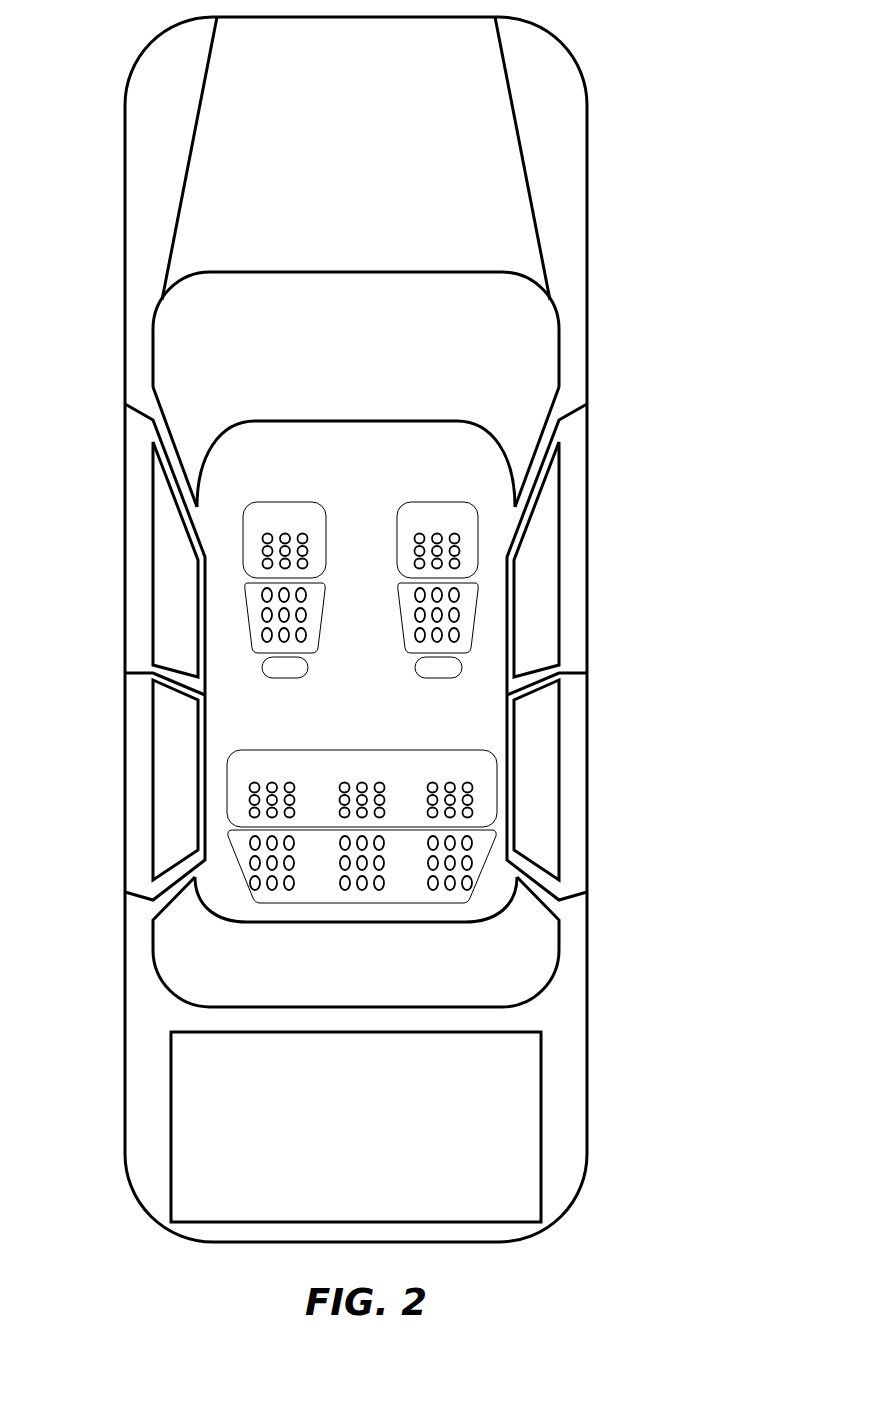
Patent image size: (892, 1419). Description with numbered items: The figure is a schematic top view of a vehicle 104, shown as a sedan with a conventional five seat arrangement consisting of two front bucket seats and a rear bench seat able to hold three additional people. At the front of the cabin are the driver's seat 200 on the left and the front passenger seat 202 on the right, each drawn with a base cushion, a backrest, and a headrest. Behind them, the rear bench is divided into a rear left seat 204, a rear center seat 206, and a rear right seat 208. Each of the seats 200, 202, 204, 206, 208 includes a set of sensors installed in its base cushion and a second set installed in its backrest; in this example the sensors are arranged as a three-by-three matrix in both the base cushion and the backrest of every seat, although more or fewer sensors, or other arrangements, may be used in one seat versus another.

The vehicle 104 is at (587, 127).
The driver's seat 200 is at (290, 502).
The front passenger seat 202 is at (417, 502).
The rear left seat 204 is at (262, 758).
The rear center seat 206 is at (362, 758).
The rear right seat 208 is at (444, 758).